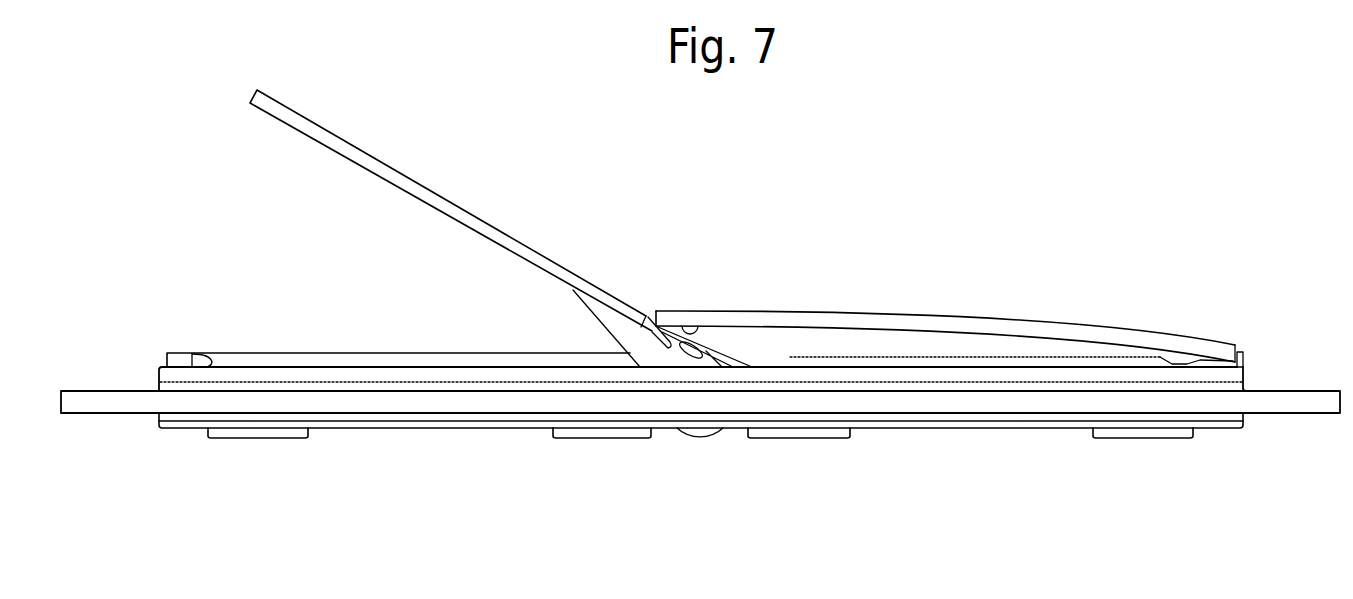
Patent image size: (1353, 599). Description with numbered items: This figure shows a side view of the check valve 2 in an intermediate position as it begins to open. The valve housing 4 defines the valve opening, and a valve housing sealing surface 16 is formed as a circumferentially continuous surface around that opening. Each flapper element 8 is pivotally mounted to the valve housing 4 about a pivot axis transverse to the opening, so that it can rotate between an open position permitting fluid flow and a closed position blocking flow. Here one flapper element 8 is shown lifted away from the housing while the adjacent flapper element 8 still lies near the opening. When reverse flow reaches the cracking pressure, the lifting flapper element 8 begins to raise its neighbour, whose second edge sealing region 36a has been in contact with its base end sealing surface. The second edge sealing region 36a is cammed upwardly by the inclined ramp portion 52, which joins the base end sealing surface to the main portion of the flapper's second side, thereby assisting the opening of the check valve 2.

The check valve 2 is at (390, 463).
The valve housing 4 is at (110, 408).
The flapper element 8 is at (472, 217).
The valve housing sealing surface 16 is at (185, 352).
The second edge sealing region 36a is at (698, 325).
The ramp portion 52 is at (700, 356).